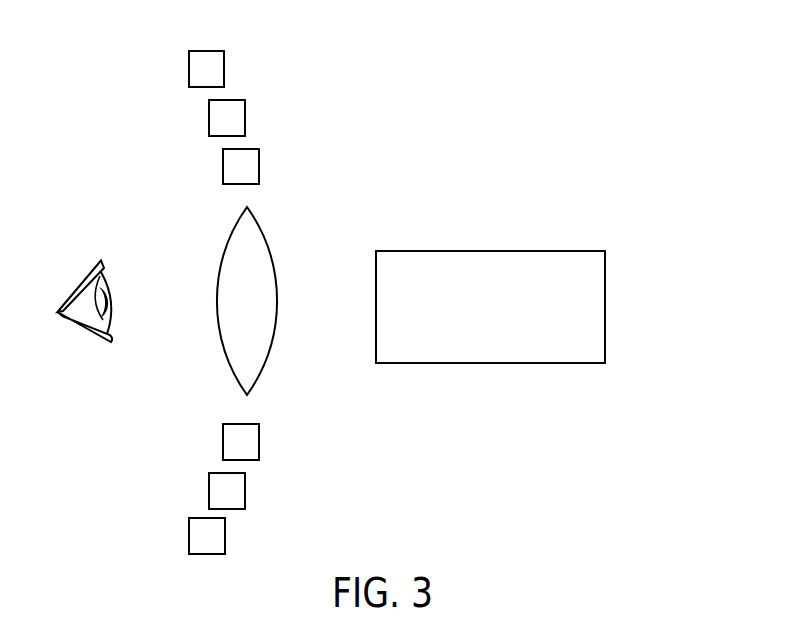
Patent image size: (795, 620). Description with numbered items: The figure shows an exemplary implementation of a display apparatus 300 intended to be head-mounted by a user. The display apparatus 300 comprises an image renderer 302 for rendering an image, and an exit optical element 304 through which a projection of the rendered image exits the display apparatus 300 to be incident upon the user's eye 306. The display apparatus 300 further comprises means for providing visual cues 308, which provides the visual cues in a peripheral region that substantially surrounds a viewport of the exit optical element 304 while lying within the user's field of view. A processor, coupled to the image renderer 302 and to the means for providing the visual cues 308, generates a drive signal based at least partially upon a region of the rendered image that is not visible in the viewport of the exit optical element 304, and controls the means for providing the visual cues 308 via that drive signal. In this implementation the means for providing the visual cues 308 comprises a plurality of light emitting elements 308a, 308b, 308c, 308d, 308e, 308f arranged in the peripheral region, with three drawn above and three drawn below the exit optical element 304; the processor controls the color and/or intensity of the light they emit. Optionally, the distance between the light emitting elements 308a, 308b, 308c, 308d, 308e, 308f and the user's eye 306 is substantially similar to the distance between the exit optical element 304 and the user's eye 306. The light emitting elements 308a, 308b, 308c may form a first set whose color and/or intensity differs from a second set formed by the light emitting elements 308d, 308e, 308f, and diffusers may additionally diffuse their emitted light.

The display apparatus 300 is at (513, 50).
The image renderer 302 is at (474, 312).
The exit optical element 304 is at (262, 223).
The user's eye 306 is at (67, 323).
The means for providing visual cues 308 is at (557, 113).
The light emitting element 308a is at (224, 73).
The light emitting element 308b is at (245, 120).
The light emitting element 308c is at (259, 165).
The light emitting element 308d is at (259, 443).
The light emitting element 308e is at (245, 490).
The light emitting element 308f is at (225, 538).